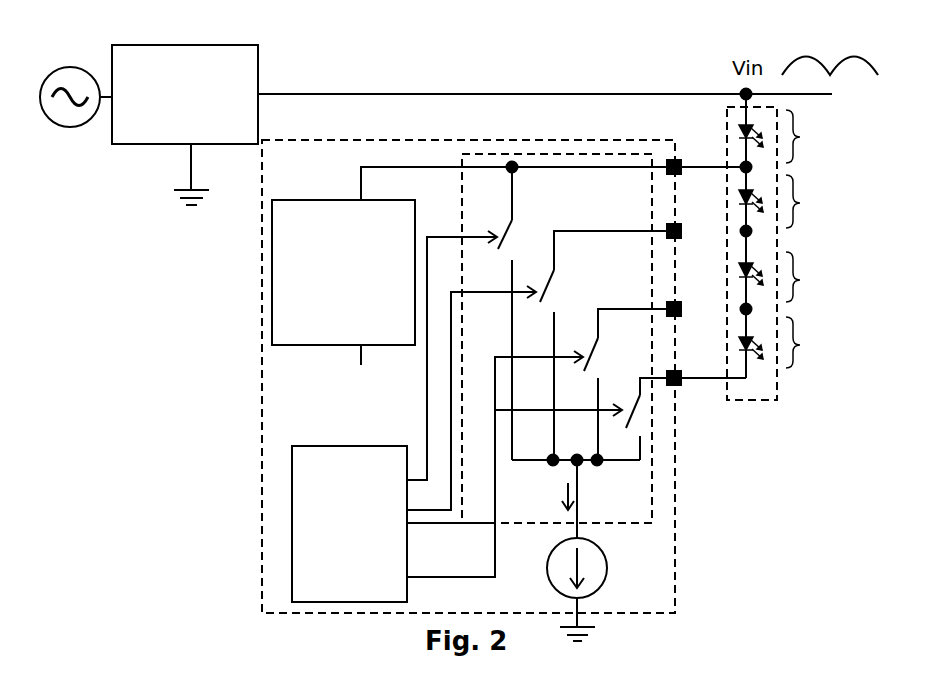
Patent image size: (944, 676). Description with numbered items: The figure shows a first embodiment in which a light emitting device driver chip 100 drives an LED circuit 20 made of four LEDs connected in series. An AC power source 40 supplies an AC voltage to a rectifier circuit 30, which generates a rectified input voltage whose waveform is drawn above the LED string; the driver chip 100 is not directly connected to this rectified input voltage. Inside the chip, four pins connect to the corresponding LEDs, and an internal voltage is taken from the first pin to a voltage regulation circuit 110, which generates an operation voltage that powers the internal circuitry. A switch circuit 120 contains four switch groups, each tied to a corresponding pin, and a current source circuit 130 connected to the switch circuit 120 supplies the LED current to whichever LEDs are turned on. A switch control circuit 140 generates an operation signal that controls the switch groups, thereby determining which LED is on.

The AC power source 40 is at (70, 67).
The rectifier circuit 30 is at (171, 138).
The LED circuit 20 is at (727, 158).
The light emitting device driver chip 100 is at (662, 606).
The voltage regulation circuit 110 is at (327, 333).
The switch circuit 120 is at (647, 512).
The current source circuit 130 is at (607, 567).
The switch control circuit 140 is at (334, 596).